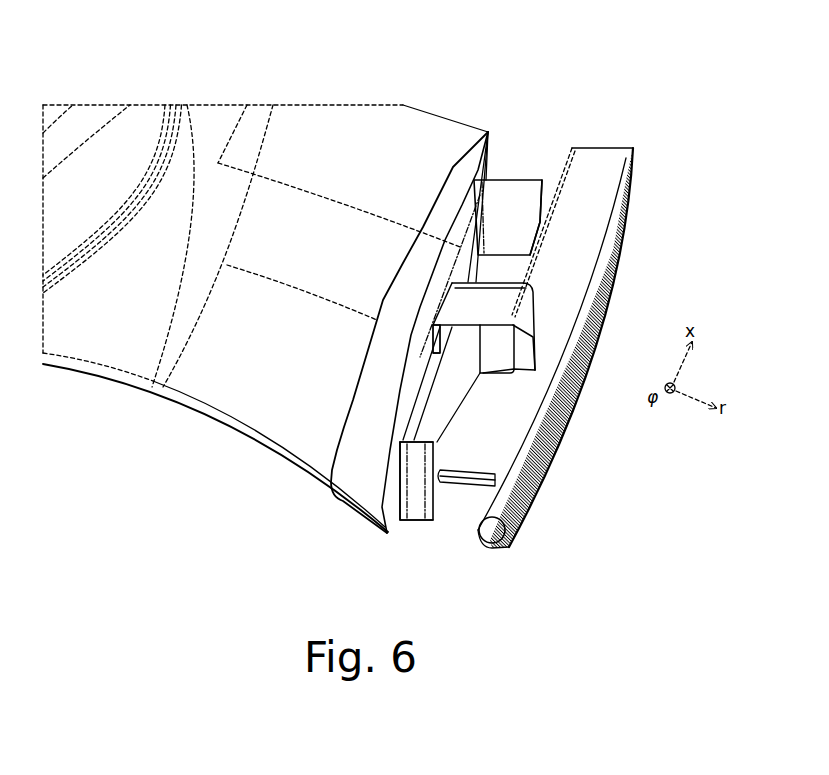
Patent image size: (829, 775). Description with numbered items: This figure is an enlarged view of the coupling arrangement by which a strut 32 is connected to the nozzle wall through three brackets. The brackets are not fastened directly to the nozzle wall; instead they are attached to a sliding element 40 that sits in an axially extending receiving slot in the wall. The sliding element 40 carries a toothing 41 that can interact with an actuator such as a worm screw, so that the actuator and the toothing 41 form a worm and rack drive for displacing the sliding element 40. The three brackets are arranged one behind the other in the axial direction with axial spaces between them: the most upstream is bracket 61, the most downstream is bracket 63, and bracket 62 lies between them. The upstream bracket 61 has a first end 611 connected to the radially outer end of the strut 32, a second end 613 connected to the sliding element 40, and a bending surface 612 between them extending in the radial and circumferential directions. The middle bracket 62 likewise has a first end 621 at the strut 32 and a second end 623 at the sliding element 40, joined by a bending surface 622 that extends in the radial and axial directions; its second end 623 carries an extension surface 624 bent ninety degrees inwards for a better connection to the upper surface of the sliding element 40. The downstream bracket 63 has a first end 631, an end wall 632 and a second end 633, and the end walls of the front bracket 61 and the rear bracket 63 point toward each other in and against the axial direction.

The strut 32 is at (293, 440).
The sliding element 40 is at (615, 163).
The toothing 41 is at (548, 466).
The bracket 61 is at (440, 507).
The first end 611 is at (403, 440).
The bending surface 612 is at (418, 510).
The second end 613 is at (460, 486).
The bracket 62 is at (483, 310).
The first end 621 is at (465, 345).
The bending surface 622 is at (500, 290).
The second end 623 is at (523, 330).
The extension surface 624 is at (500, 357).
The bracket 63 is at (485, 180).
The first end 631 is at (475, 160).
The end wall 632 is at (518, 190).
The second end 633 is at (540, 197).